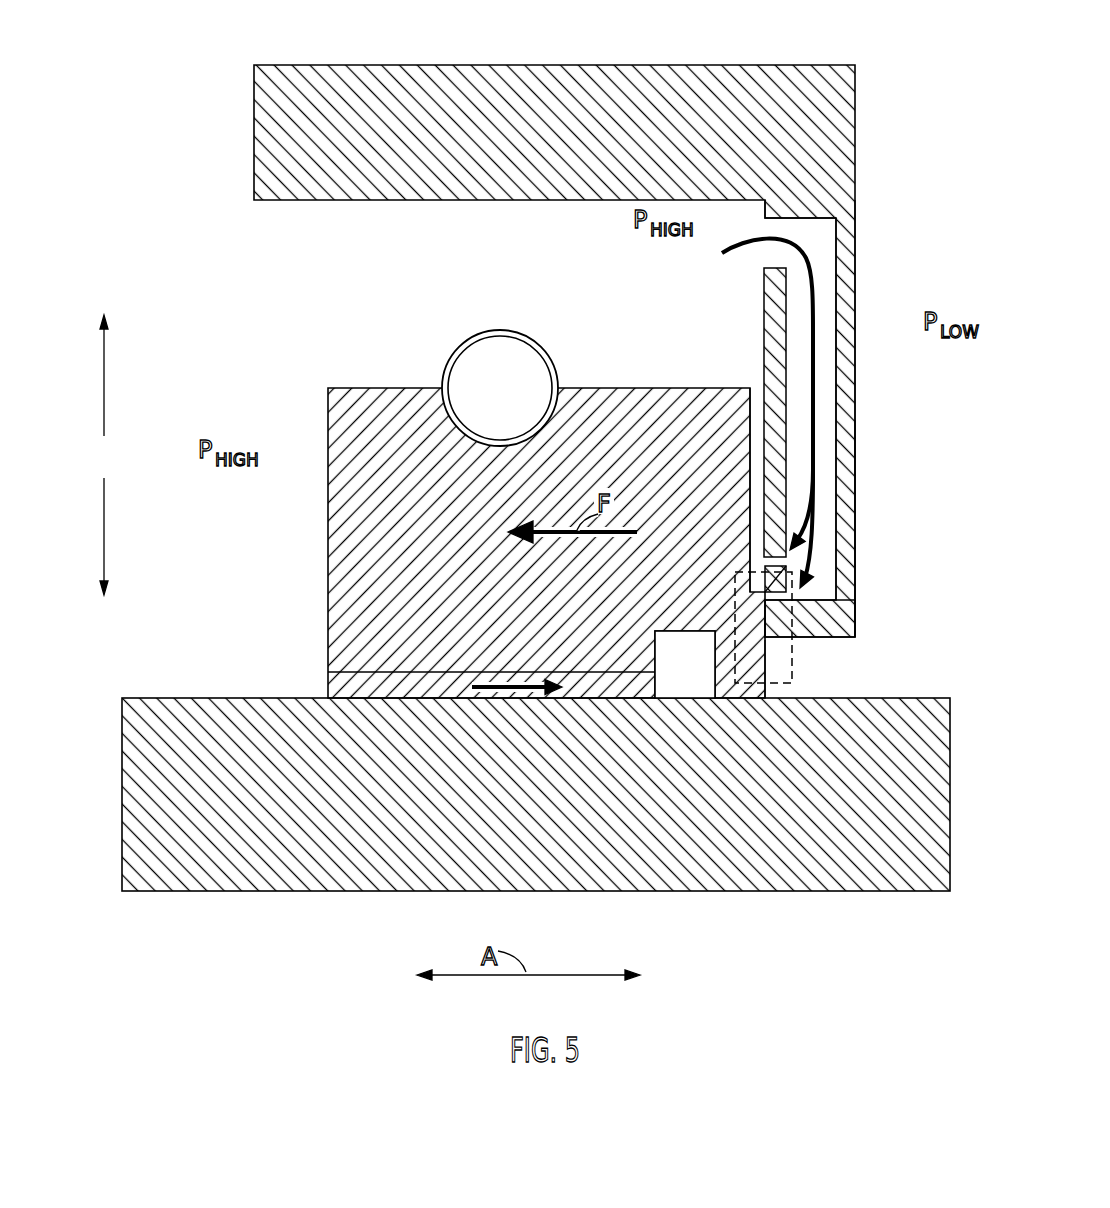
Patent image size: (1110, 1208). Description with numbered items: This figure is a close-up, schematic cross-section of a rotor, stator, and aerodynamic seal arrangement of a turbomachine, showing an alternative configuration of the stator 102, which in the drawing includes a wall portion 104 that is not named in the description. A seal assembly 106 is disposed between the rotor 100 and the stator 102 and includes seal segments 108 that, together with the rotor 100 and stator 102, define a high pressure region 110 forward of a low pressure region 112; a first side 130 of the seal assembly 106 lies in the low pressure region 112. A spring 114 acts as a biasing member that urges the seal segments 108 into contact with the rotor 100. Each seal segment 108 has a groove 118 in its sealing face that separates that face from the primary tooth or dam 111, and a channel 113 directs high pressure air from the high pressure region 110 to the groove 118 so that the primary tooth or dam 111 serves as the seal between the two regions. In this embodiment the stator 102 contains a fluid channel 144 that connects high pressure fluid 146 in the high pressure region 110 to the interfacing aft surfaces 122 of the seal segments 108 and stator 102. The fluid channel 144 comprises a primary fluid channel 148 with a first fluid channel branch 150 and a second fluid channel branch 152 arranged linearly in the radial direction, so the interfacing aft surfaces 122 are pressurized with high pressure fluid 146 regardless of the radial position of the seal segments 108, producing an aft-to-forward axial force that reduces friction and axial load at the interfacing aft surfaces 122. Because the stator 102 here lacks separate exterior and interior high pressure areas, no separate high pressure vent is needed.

The rotor 100 is at (415, 824).
The stator 102 is at (858, 136).
The housing wall 104 is at (858, 192).
The seal assembly 106 is at (677, 343).
The seal segments 108 is at (612, 373).
The high pressure region 110 is at (526, 310).
The primary tooth or dam 111 is at (783, 683).
The low pressure region 112 is at (970, 438).
The channel 113 is at (427, 683).
The spring 114 is at (444, 344).
The groove 118 is at (678, 690).
The interfacing aft surfaces 122 is at (792, 657).
The first side 130 is at (750, 482).
The fluid channel 144 is at (822, 282).
The high pressure fluid 146 is at (816, 329).
The primary fluid channel 148 is at (827, 385).
The first fluid channel branch 150 is at (772, 604).
The second fluid channel branch 152 is at (767, 553).